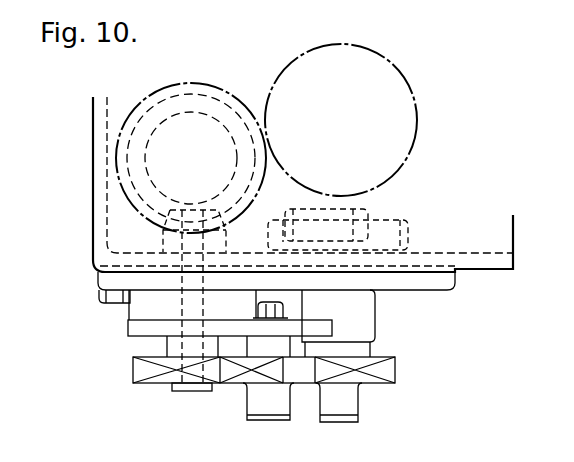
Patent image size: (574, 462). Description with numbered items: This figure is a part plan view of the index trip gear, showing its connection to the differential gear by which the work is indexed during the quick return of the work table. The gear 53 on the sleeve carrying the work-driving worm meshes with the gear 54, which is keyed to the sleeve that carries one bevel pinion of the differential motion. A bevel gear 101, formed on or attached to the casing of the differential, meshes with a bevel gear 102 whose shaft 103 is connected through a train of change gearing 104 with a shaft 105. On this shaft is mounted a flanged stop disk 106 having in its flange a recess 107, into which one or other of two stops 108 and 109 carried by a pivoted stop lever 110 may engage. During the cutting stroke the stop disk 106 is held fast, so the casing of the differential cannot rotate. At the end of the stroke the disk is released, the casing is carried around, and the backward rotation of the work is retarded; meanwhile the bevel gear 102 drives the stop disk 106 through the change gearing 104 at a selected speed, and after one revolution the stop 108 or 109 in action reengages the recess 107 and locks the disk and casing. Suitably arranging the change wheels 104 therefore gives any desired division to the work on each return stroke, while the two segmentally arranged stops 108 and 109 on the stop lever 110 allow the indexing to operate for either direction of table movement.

The gear 53 is at (414, 150).
The gear 54 is at (110, 171).
The bevel gear 101 is at (238, 195).
The bevel gear 102 is at (170, 227).
The shaft 103 is at (181, 301).
The train of change gearing 104 is at (133, 371).
The shaft 105 is at (358, 421).
The flanged stop disk 106 is at (409, 236).
The recess 107 is at (273, 239).
The stop 108 is at (291, 218).
The stop 109 is at (368, 213).
The pivoted stop lever 110 is at (306, 212).